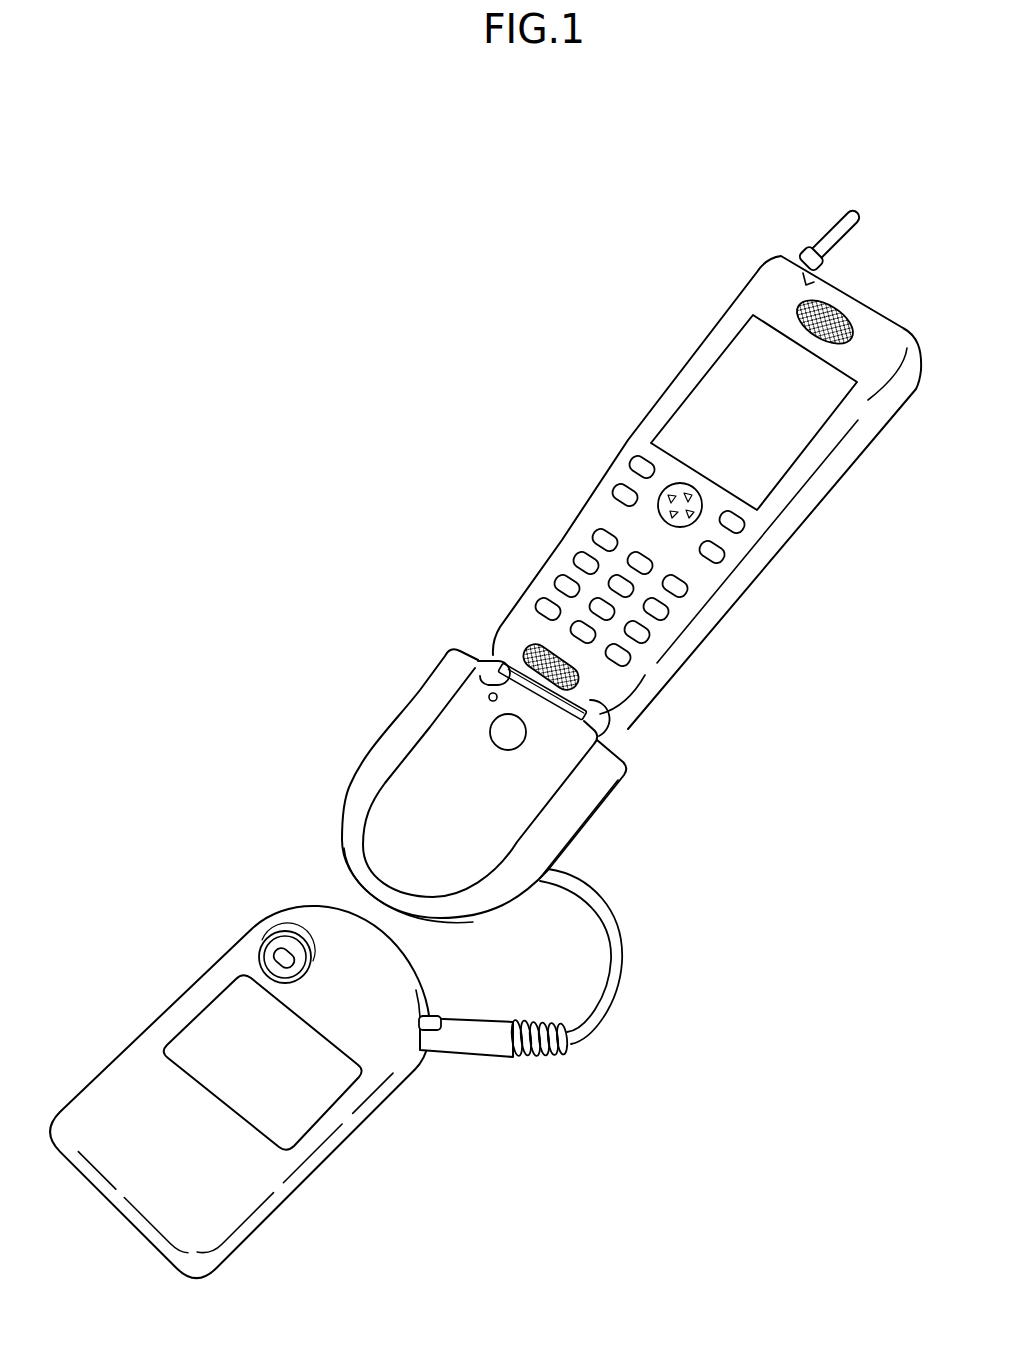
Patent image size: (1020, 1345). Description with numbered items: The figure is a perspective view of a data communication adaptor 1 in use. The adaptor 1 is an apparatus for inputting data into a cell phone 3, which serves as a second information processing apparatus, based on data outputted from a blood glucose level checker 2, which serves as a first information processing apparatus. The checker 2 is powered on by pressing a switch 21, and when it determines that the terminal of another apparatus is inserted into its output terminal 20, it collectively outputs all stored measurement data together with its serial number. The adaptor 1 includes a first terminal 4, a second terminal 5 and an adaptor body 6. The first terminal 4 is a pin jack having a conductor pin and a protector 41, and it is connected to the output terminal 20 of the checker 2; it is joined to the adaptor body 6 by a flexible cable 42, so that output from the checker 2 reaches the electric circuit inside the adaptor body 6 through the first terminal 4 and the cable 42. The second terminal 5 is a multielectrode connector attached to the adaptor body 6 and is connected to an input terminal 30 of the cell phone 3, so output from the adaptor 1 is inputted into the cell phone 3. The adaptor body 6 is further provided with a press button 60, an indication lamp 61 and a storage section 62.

The data communication adaptor 1 is at (388, 702).
The blood glucose level checker 2 is at (181, 969).
The cell phone 3 is at (626, 407).
The first terminal 4 is at (459, 1042).
The second terminal 5 is at (594, 710).
The adaptor body 6 is at (580, 803).
The output terminal 20 is at (432, 1017).
The switch 21 is at (280, 952).
The input terminal 30 is at (472, 668).
The protector 41 is at (497, 1025).
The flexible cable 42 is at (623, 957).
The press button 60 is at (490, 735).
The indication lamp 61 is at (488, 696).
The storage section 62 is at (473, 922).